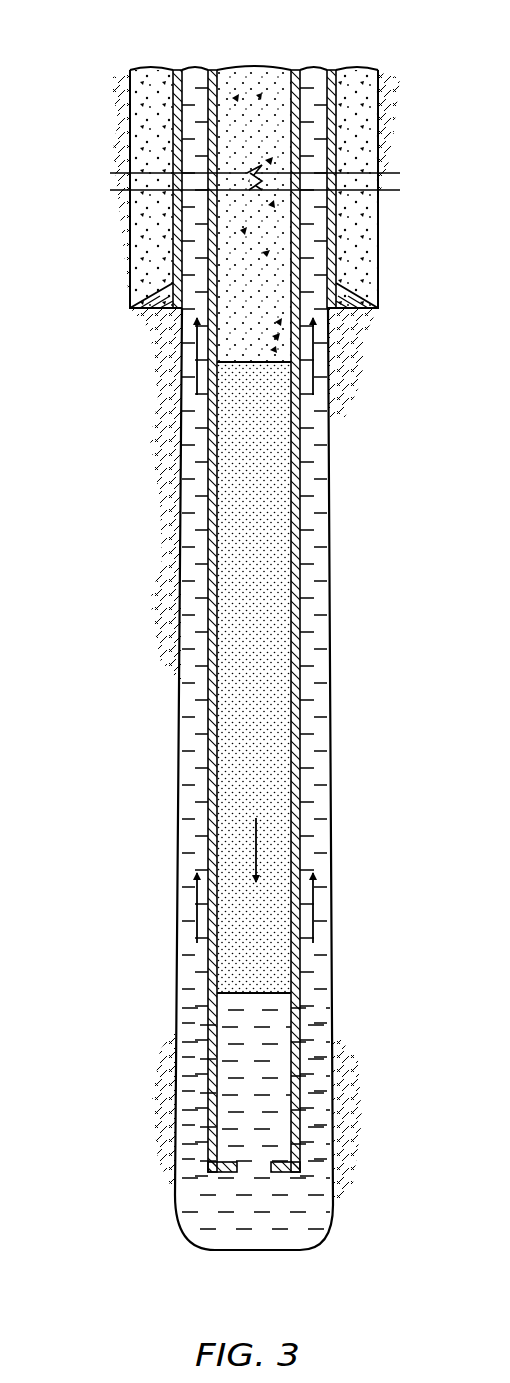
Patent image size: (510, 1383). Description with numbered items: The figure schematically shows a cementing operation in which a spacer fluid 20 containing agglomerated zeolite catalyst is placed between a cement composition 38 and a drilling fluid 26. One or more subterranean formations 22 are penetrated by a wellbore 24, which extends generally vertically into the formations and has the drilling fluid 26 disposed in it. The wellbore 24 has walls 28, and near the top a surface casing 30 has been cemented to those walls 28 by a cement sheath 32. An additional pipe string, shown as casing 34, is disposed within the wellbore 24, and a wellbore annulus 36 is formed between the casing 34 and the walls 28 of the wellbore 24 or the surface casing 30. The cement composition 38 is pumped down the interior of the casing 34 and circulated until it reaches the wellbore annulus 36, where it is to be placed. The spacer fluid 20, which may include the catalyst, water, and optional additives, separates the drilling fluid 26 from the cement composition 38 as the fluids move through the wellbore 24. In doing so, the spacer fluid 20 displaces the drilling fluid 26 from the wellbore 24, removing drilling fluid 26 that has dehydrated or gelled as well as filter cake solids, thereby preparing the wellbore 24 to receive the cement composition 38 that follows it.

The spacer fluid 20 is at (265, 444).
The subterranean formations 22 is at (117, 547).
The wellbore 24 is at (334, 514).
The drilling fluid 26 is at (192, 781).
The walls 28 is at (137, 287).
The surface casing 30 is at (170, 88).
The cement sheath 32 is at (155, 263).
The casing 34 is at (208, 717).
The wellbore annulus 36 is at (190, 738).
The cement composition 38 is at (256, 95).